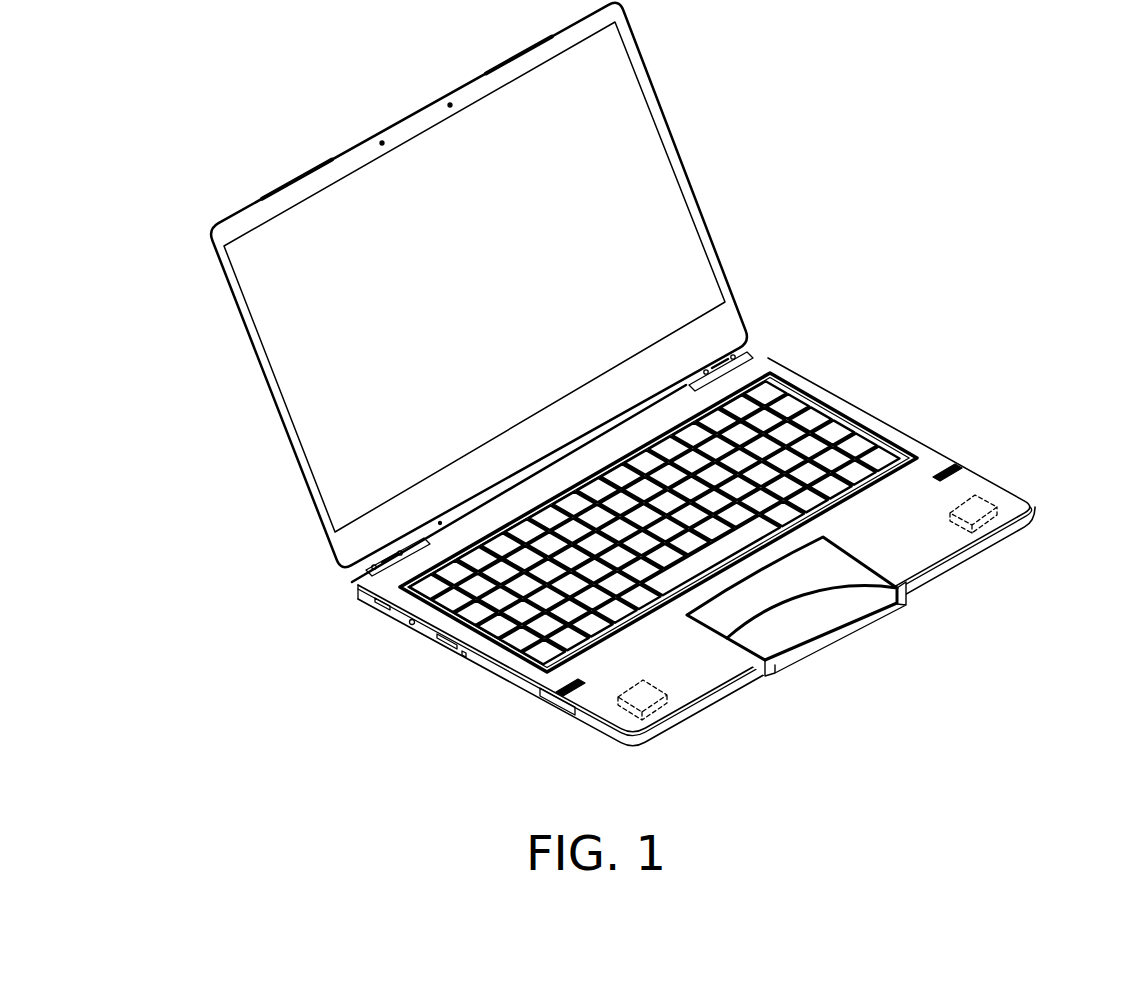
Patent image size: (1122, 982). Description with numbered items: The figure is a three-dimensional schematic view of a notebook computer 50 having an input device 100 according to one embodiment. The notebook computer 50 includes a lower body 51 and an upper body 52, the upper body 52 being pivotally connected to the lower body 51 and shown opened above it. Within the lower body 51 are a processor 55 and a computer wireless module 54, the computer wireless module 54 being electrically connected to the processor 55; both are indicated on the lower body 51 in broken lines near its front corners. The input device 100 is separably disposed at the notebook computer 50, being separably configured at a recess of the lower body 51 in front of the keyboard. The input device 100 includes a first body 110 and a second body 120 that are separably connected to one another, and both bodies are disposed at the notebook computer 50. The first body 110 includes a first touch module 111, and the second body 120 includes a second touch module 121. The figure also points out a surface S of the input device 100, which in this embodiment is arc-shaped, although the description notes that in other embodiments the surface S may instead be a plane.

The notebook computer 50 is at (621, 391).
The lower body 51 is at (701, 559).
The upper body 52 is at (653, 98).
The computer wireless module 54 is at (1013, 483).
The processor 55 is at (620, 708).
The input device 100 is at (882, 598).
The first body 110 is at (800, 655).
The first touch module 111 is at (853, 585).
The second body 120 is at (697, 630).
The second touch module 121 is at (813, 558).
The surface S is at (771, 633).